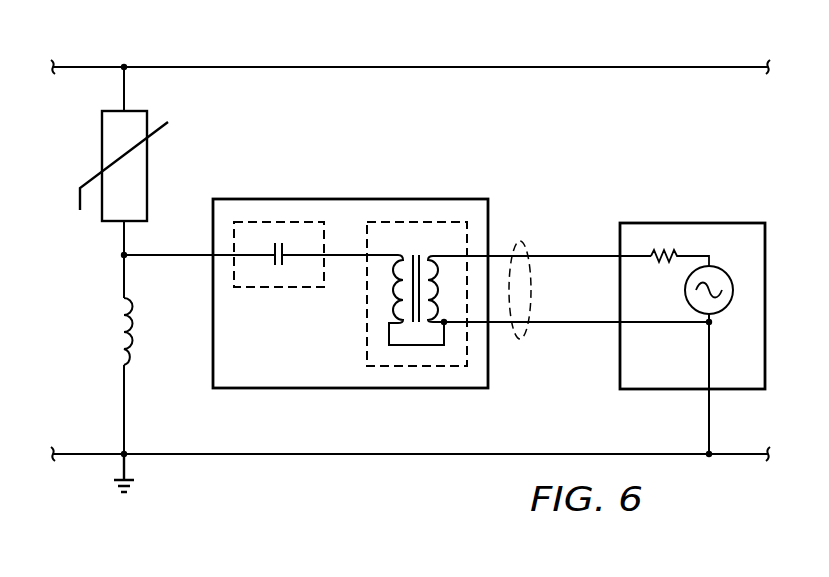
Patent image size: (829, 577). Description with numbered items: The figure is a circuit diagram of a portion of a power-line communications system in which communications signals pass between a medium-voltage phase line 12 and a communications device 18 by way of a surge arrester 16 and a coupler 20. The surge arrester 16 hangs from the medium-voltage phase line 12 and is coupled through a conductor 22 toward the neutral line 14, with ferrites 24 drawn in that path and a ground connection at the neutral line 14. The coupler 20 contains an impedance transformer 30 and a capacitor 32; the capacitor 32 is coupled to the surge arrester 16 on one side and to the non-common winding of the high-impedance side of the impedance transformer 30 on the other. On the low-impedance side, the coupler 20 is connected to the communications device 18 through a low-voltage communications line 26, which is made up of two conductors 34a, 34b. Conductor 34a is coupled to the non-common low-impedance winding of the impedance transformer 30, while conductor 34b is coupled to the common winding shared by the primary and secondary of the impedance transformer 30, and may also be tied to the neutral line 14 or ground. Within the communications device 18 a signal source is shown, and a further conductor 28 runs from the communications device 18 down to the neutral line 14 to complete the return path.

The medium-voltage phase line 12 is at (577, 67).
The neutral line 14 is at (410, 456).
The surge arrester 16 is at (102, 143).
The communications device 18 is at (694, 223).
The coupler 20 is at (351, 199).
The conductor 22 is at (125, 403).
The ferrites 24 is at (140, 340).
The low-voltage communications line 26 is at (518, 240).
The conductor 28 is at (709, 410).
The impedance transformer 30 is at (367, 315).
The capacitor 32 is at (278, 288).
The conductor 34a is at (577, 255).
The conductor 34b is at (577, 324).